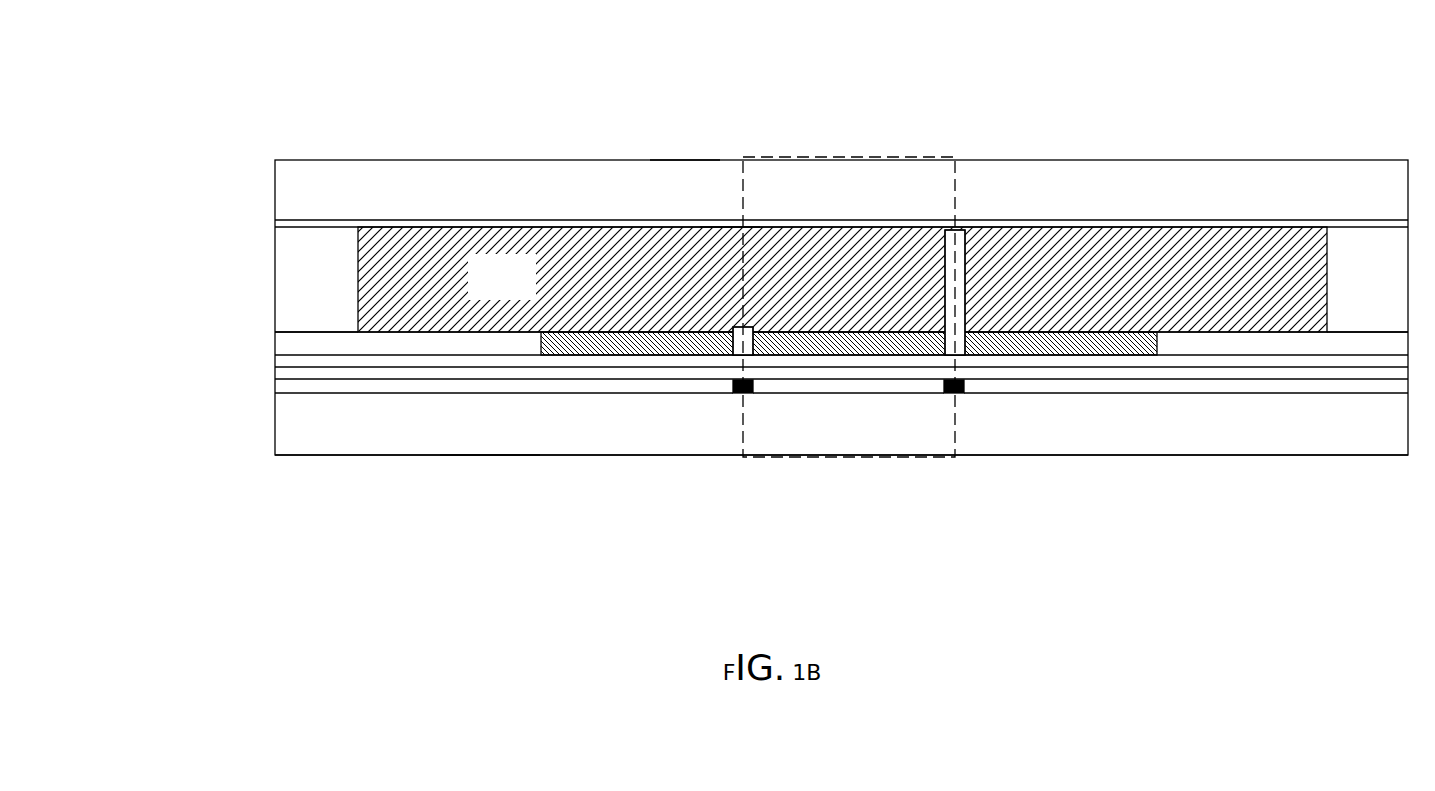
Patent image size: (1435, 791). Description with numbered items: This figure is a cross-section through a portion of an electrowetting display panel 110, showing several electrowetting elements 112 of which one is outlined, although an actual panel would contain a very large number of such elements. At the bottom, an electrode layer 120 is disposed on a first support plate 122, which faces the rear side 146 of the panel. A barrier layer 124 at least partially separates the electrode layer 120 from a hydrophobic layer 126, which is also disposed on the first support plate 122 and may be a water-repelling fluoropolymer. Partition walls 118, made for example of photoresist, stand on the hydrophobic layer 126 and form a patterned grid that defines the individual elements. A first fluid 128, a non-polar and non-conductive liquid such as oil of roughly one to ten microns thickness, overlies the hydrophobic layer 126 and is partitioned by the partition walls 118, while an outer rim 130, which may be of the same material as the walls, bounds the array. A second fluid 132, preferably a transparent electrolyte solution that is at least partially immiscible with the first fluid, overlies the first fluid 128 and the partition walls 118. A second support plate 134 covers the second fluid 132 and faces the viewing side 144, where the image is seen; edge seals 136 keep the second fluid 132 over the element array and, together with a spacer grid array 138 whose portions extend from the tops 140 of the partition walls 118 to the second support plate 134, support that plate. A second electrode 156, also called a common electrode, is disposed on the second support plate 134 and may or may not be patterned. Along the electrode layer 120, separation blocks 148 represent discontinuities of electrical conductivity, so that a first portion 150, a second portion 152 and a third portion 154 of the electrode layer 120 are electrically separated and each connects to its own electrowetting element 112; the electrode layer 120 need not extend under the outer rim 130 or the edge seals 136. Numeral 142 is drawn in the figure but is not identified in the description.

The electrowetting display panel 110 is at (1012, 103).
The electrowetting element 112 is at (743, 440).
The partition walls 118 is at (749, 356).
The electrode layer 120 is at (275, 368).
The first support plate 122 is at (352, 437).
The barrier layer 124 is at (275, 375).
The hydrophobic layer 126 is at (275, 362).
The first fluid 128 is at (1050, 355).
The outer rim 130 is at (275, 343).
The second fluid 132 is at (482, 289).
The second support plate 134 is at (352, 200).
The edge seals 136 is at (297, 284).
The spacer grid array 138 is at (968, 248).
The tops of the partition walls 140 is at (736, 328).
The active region 142 is at (718, 237).
The viewing side 144 is at (674, 127).
The rear side 146 is at (478, 498).
The separation block 148 is at (735, 386).
The first portion of the electrode layer 150 is at (612, 393).
The second portion of the electrode layer 152 is at (923, 393).
The third portion of the electrode layer 154 is at (1255, 394).
The second electrode 156 is at (452, 220).